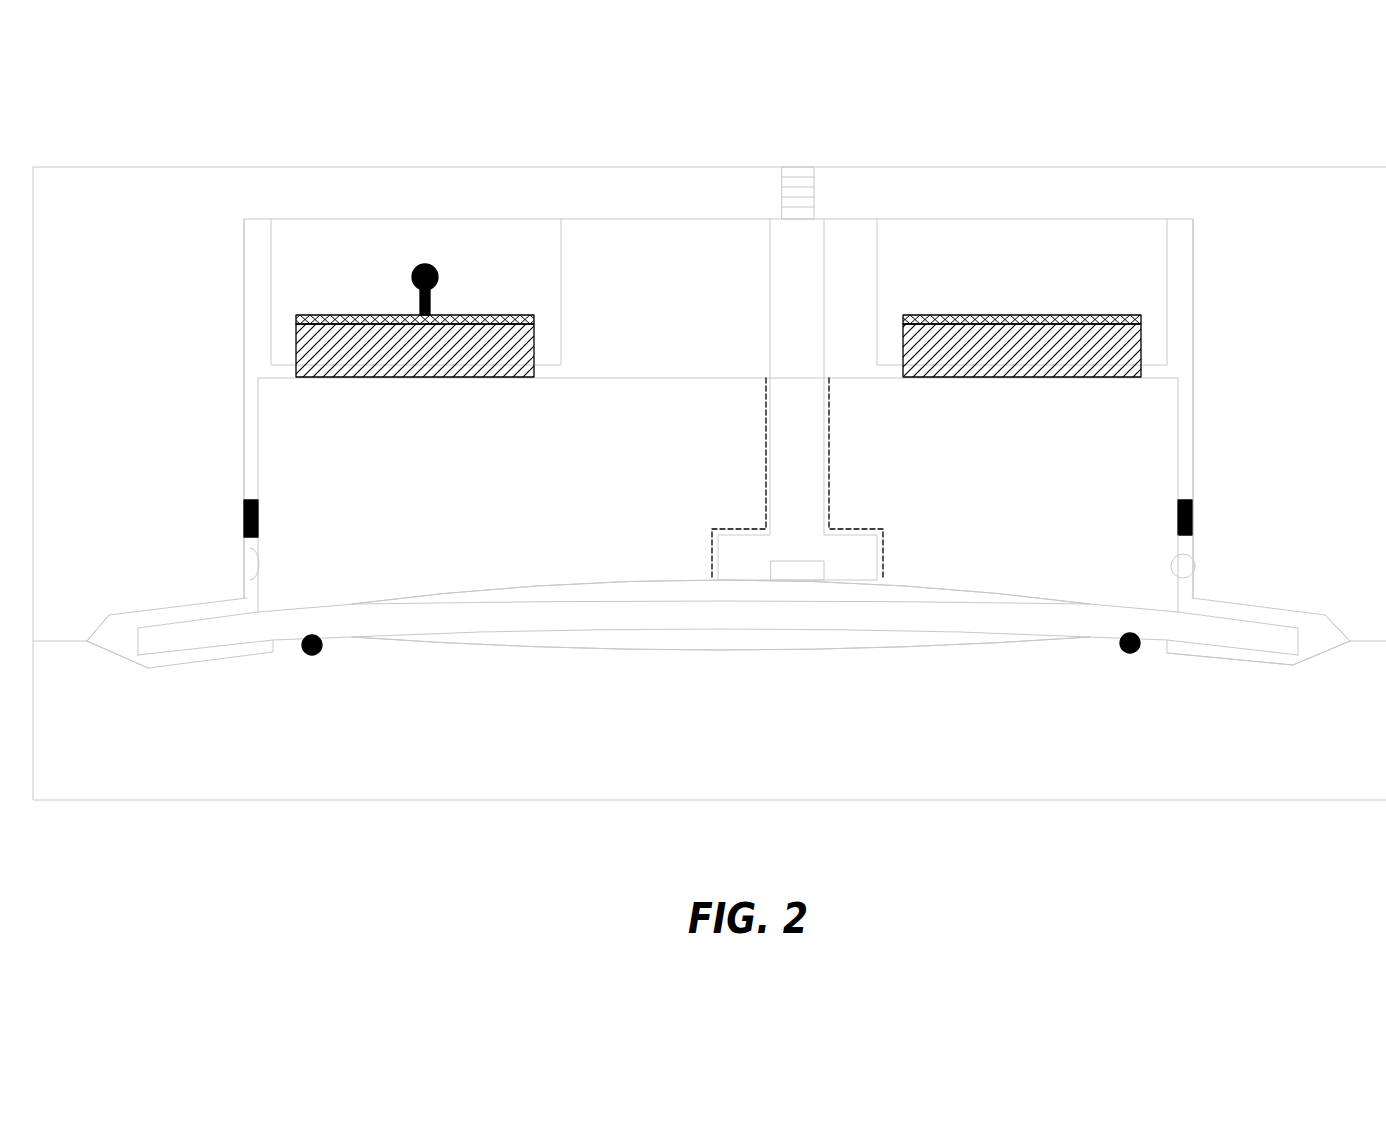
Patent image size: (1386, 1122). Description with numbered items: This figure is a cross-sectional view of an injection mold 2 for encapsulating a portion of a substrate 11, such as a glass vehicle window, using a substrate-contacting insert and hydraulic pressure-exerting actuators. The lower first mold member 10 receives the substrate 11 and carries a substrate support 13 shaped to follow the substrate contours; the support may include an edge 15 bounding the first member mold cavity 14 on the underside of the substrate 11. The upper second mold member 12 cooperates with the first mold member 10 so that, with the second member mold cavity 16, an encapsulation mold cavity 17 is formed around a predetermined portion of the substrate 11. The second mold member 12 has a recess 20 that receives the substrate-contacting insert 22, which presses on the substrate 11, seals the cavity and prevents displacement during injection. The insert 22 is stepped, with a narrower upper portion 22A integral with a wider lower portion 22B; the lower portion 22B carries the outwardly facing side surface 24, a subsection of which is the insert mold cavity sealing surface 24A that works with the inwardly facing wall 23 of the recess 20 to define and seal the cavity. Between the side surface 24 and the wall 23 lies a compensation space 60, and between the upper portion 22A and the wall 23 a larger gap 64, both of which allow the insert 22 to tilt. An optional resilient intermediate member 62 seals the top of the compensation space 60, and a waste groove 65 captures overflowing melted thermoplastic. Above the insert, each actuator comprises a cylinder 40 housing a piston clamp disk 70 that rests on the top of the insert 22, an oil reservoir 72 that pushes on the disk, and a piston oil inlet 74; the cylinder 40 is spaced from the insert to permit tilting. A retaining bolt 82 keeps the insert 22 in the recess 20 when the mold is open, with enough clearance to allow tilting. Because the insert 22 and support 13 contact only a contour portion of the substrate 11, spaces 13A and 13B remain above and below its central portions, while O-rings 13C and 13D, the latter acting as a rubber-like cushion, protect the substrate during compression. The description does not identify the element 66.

The injection mold 2 is at (180, 108).
The first mold member 10 is at (450, 775).
The substrate 11 is at (718, 627).
The second mold member 12 is at (100, 195).
The substrate support 13 is at (1100, 642).
The space 13A is at (628, 645).
The space 13B is at (690, 600).
The O-ring 13C is at (308, 656).
The O-ring 13D is at (1133, 655).
The first member mold cavity 14 is at (1230, 663).
The edge 15 is at (1170, 648).
The second member mold cavity 16 is at (110, 618).
The encapsulation mold cavity 17 is at (119, 642).
The recess 20 is at (650, 270).
The substrate-contacting insert 22 is at (794, 399).
The upper portion 22A is at (1110, 428).
The lower portion 22B is at (1082, 555).
The inwardly facing wall 23 is at (1200, 430).
The outwardly facing side surface 24 is at (1182, 545).
The insert mold cavity sealing surface 24A is at (1183, 606).
The cylinder 40 is at (282, 270).
The compensation space 60 is at (240, 580).
The intermediate member 62 is at (246, 522).
The gap 64 is at (247, 420).
The waste groove 65 is at (1185, 568).
The left upper wall 66 is at (262, 297).
The piston clamp disk 70 is at (345, 355).
The oil reservoir 72 is at (460, 315).
The piston oil inlet 74 is at (425, 264).
The retaining bolt 82 is at (828, 262).